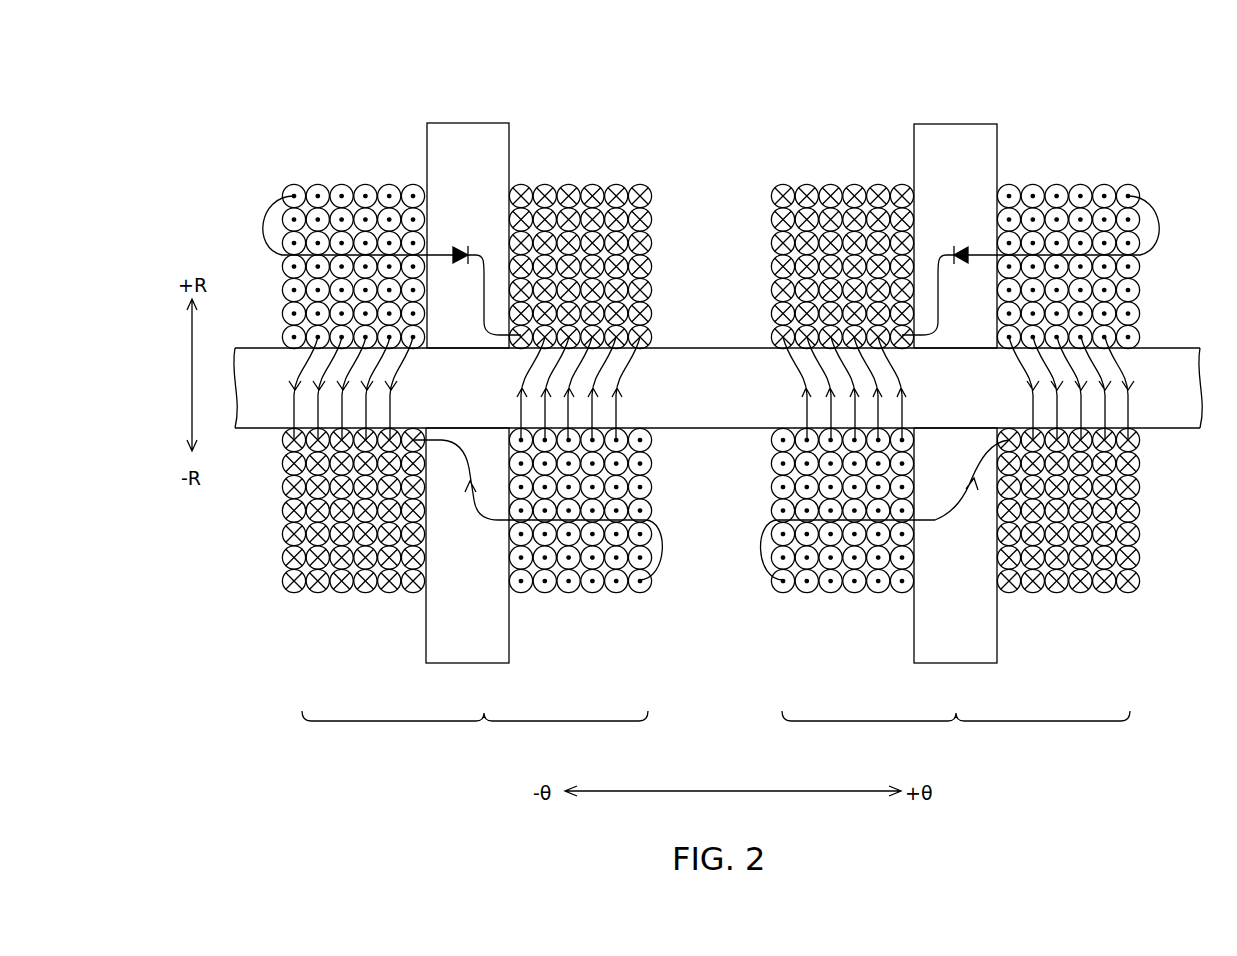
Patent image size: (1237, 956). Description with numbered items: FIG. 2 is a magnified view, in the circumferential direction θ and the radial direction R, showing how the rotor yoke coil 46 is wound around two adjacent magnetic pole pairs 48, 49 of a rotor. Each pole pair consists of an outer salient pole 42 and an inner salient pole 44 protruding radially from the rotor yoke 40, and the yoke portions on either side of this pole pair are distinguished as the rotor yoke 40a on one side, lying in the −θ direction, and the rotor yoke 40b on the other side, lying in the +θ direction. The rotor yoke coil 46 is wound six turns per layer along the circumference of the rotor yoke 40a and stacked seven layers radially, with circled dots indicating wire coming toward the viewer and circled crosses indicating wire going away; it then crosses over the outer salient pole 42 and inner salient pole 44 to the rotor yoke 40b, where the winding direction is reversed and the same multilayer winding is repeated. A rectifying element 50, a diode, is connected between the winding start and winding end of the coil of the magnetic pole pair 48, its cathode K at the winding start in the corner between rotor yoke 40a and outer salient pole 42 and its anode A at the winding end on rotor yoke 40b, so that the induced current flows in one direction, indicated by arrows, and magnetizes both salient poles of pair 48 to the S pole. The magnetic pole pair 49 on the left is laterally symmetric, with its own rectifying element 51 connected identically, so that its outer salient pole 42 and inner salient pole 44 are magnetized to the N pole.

The rotor yoke 40 is at (726, 396).
The rotor yoke on one side 40a is at (254, 414).
The rotor yoke on the other side 40b is at (657, 358).
The outer salient pole 42 is at (946, 94).
The inner salient pole 44 is at (476, 665).
The rotor yoke coil 46 is at (716, 734).
The magnetic pole pair 48 is at (1130, 99).
The magnetic pole pair 49 is at (306, 102).
The rectifying element 50 is at (960, 267).
The rectifying element 51 is at (463, 270).